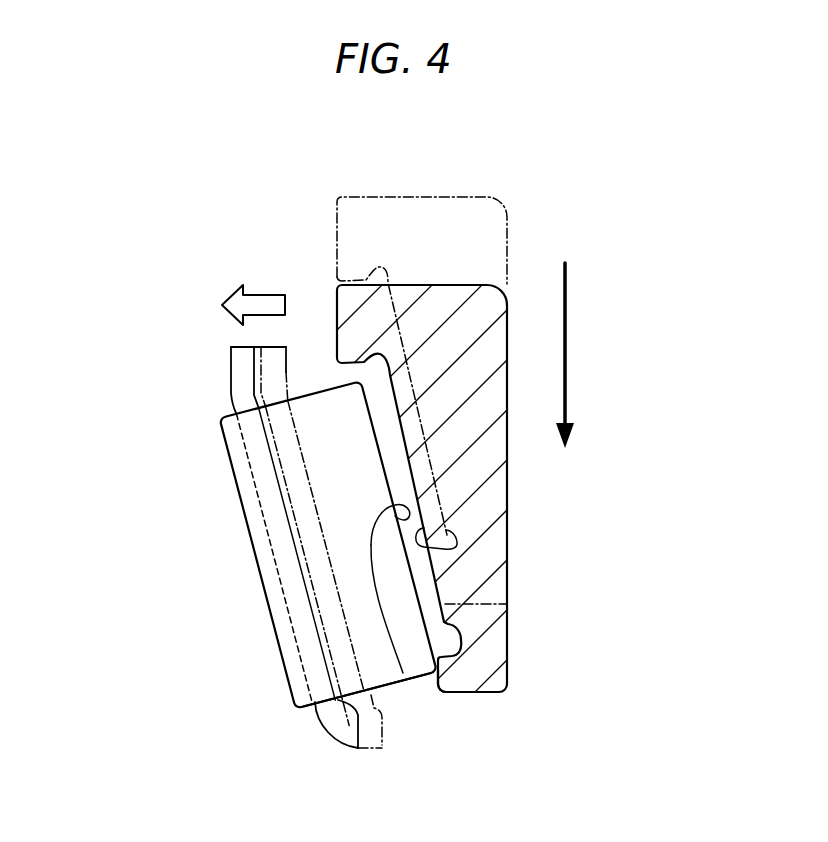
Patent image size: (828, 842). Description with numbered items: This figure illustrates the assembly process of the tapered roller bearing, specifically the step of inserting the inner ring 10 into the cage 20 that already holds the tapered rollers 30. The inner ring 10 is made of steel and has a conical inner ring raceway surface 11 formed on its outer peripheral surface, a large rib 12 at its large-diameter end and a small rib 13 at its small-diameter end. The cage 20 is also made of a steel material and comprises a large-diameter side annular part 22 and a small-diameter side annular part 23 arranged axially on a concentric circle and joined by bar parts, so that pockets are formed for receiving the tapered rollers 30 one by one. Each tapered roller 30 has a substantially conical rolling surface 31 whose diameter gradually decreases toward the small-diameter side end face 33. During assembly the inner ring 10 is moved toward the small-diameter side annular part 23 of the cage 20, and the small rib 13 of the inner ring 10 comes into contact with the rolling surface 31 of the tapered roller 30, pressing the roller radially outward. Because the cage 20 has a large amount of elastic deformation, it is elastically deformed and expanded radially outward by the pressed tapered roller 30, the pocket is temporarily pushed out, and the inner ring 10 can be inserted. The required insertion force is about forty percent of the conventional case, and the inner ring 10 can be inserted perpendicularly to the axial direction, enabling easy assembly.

The inner ring 10 is at (414, 466).
The inner ring raceway surface 11 is at (440, 549).
The large rib 12 is at (443, 290).
The small rib 13 is at (473, 688).
The cage 20 is at (268, 565).
The large-diameter side annular part 22 is at (237, 358).
The small-diameter side annular part 23 is at (342, 738).
The tapered roller 30 is at (309, 587).
The rolling surface 31 is at (403, 673).
The small-diameter side end face 33 is at (395, 688).